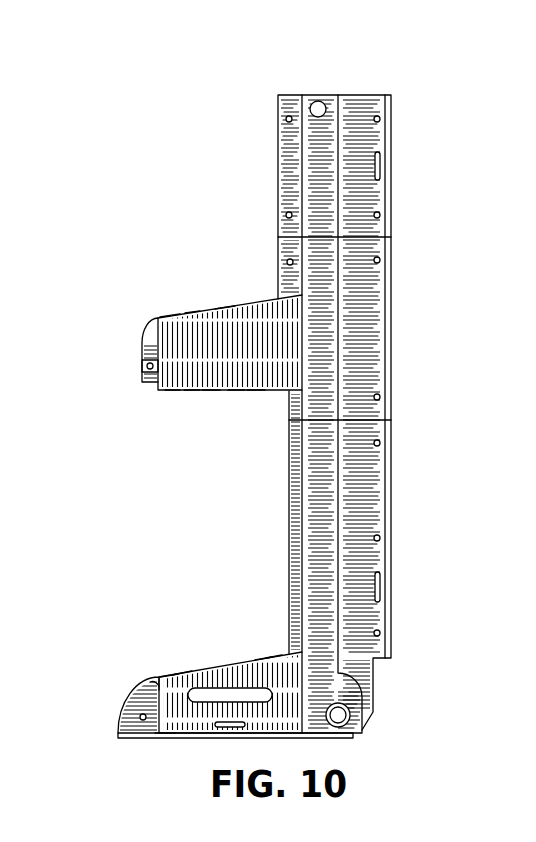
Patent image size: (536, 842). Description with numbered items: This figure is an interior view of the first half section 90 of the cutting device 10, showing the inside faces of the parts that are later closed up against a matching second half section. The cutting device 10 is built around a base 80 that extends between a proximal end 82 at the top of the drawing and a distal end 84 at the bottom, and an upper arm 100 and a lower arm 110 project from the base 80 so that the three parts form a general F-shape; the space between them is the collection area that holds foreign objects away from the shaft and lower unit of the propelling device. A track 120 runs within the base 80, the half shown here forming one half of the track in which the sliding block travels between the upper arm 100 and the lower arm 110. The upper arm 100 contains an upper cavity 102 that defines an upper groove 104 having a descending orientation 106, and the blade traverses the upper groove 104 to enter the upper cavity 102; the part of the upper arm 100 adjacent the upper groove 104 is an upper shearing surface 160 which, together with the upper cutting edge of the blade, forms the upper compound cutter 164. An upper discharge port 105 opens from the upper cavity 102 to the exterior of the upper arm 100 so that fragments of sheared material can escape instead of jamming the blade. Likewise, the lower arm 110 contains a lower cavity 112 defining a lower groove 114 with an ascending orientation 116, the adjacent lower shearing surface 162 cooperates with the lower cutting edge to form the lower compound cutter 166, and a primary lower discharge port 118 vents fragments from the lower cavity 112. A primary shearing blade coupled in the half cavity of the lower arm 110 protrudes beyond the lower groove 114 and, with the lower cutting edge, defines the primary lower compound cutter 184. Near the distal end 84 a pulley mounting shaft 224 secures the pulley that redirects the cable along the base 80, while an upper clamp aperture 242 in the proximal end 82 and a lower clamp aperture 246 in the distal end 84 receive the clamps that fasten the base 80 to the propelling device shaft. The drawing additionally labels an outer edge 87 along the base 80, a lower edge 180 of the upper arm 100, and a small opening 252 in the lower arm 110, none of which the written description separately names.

The cutting device 10 is at (392, 150).
The base 80 is at (392, 225).
The proximal end 82 is at (363, 95).
The distal end 84 is at (338, 738).
The panel edge 87 is at (392, 95).
The first half section 90 is at (278, 131).
The upper arm 100 is at (146, 333).
The upper cavity 102 is at (177, 315).
The upper groove 104 is at (147, 378).
The upper discharge port 105 is at (192, 312).
The descending orientation 106 is at (210, 391).
The lower arm 110 is at (125, 716).
The lower cavity 112 is at (160, 678).
The lower groove 114 is at (155, 688).
The ascending orientation 116 is at (232, 664).
The primary lower discharge port 118 is at (222, 688).
The track 120 is at (318, 95).
The upper shearing surface 160 is at (192, 391).
The lower shearing surface 162 is at (182, 672).
The upper compound cutter 164 is at (255, 391).
The lower compound cutter 166 is at (272, 654).
The lower corner edge 180 is at (172, 391).
The primary lower compound cutter 184 is at (170, 677).
The pulley mounting shaft 224 is at (346, 720).
The upper clamp aperture 242 is at (381, 167).
The lower clamp aperture 246 is at (381, 587).
The small slot 252 is at (223, 727).